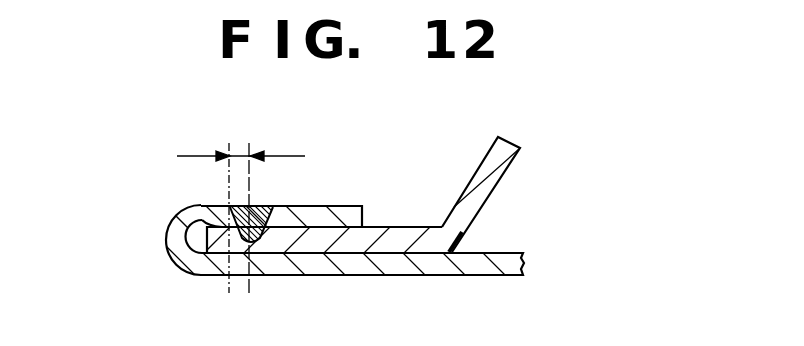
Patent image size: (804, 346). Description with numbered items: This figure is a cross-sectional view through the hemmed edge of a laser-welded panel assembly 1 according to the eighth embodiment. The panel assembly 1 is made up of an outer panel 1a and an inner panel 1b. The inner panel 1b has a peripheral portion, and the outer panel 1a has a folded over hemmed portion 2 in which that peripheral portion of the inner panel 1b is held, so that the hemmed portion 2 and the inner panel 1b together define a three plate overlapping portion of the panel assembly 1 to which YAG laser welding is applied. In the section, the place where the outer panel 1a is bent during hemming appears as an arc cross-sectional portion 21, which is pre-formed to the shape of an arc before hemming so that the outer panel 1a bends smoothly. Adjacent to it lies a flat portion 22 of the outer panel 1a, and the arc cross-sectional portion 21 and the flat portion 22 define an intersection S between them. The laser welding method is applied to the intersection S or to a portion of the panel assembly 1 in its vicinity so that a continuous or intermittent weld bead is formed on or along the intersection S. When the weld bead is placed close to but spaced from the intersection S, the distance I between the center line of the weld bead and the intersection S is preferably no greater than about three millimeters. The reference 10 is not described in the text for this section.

The panel assembly 1 is at (425, 194).
The outer panel 1a is at (496, 262).
The inner panel 1b is at (505, 166).
The hemmed portion 2 is at (261, 184).
The contact portion 10 is at (325, 210).
The arc cross-sectional portion 21 is at (167, 240).
The flat portion 22 is at (310, 207).
The intersection S is at (227, 202).
The distance I is at (240, 152).